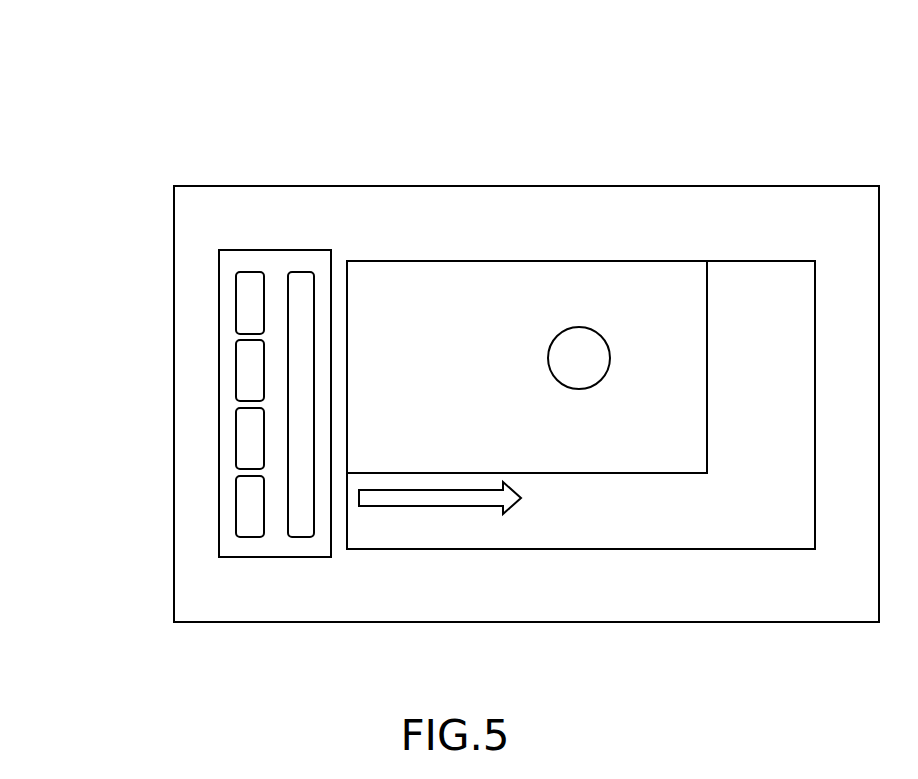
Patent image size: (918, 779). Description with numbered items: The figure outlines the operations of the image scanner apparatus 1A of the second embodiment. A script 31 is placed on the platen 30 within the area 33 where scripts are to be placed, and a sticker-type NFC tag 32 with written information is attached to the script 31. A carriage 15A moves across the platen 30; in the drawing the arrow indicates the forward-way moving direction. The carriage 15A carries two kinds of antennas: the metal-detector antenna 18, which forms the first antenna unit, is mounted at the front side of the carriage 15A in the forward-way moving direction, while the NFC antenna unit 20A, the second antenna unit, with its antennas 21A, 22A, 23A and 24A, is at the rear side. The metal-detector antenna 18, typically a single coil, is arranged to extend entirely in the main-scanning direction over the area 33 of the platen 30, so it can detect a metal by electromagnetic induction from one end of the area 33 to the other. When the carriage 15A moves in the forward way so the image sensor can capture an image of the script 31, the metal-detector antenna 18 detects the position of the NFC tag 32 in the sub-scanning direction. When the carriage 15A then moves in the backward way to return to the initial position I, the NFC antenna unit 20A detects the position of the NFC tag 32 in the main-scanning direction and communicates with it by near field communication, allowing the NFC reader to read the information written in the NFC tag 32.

The image scanner apparatus 1A is at (472, 112).
The platen 30 is at (237, 186).
The carriage 15A is at (250, 557).
The initial position I is at (294, 234).
The NFC antenna unit 20A is at (106, 290).
The antenna 21A is at (236, 300).
The antenna 22A is at (236, 367).
The antenna 23A is at (236, 435).
The antenna 24A is at (236, 503).
The metal-detector antenna 18 is at (300, 537).
The area 33 is at (762, 260).
The script 31 is at (634, 473).
The NFC tag 32 is at (579, 327).